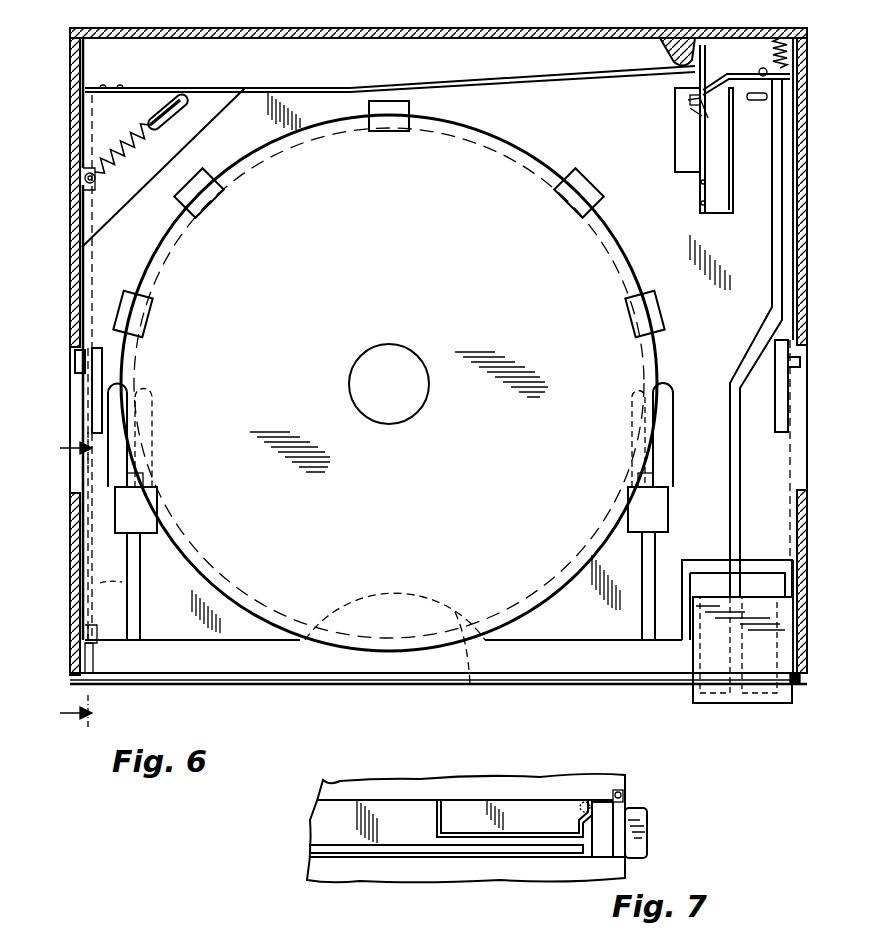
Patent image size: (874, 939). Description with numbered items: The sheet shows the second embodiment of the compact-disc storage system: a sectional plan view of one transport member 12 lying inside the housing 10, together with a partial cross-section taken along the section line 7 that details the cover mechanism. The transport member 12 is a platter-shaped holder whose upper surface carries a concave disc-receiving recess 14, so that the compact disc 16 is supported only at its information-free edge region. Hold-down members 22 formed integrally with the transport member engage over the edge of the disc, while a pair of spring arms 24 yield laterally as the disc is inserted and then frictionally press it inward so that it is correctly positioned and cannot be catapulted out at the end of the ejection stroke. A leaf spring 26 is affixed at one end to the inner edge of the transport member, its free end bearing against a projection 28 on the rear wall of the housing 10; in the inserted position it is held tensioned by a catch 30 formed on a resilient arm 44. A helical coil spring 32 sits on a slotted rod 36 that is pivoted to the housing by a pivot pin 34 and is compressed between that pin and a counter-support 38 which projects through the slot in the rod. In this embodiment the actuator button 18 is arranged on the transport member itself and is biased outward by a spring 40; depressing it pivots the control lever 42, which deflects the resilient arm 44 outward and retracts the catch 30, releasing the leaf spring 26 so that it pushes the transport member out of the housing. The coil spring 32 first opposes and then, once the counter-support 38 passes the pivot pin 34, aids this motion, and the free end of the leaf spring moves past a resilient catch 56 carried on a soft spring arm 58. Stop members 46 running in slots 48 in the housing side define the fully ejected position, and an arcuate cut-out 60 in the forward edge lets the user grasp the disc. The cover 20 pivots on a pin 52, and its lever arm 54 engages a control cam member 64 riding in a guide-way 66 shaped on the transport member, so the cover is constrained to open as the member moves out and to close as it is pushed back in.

In FIG. 6, the section line 7— 7 is at (82, 581).
In FIG. 6, the housing 10 is at (206, 27).
In FIG. 7, the housing 10 is at (630, 777).
In FIG. 7, the transport member 12 is at (343, 812).
In FIG. 6, the disc-receiving recess 14 is at (224, 650).
In FIG. 6, the compact disc 16 is at (432, 634).
In FIG. 6, the actuator button 18 is at (760, 703).
In FIG. 7, the actuator button 18 is at (645, 816).
In FIG. 6, the cover 20 is at (344, 680).
In FIG. 7, the cover 20 is at (630, 849).
In FIG. 6, the hold-down member 22 is at (390, 132).
In FIG. 6, the spring arm 24 is at (134, 463).
In FIG. 6, the leaf spring 26 is at (548, 84).
In FIG. 6, the projection 28 is at (670, 50).
In FIG. 6, the catch 30 is at (702, 48).
In FIG. 6, the helical coil spring 32 is at (150, 128).
In FIG. 6, the pivot pin 34 is at (95, 184).
In FIG. 6, the slotted rod 36 is at (174, 104).
In FIG. 6, the counter-support 38 is at (180, 112).
In FIG. 6, the spring 40 is at (768, 46).
In FIG. 6, the control lever 42 is at (748, 84).
In FIG. 6, the resilient arm 44 is at (690, 152).
In FIG. 6, the stop member 46 is at (80, 362).
In FIG. 6, the slot 48 is at (100, 410).
In FIG. 6, the pin 52 is at (798, 686).
In FIG. 7, the pin 52 is at (623, 794).
In FIG. 6, the lever arm 54 is at (95, 655).
In FIG. 7, the lever arm 54 is at (603, 808).
In FIG. 6, the resilient catch 56 is at (688, 108).
In FIG. 6, the spring arm 58 is at (690, 100).
In FIG. 6, the arcuate cut-out 60 is at (468, 668).
In FIG. 6, the control cam member 64 is at (100, 640).
In FIG. 7, the control cam member 64 is at (583, 802).
In FIG. 6, the guide-way 66 is at (100, 585).
In FIG. 7, the guide-way 66 is at (522, 832).